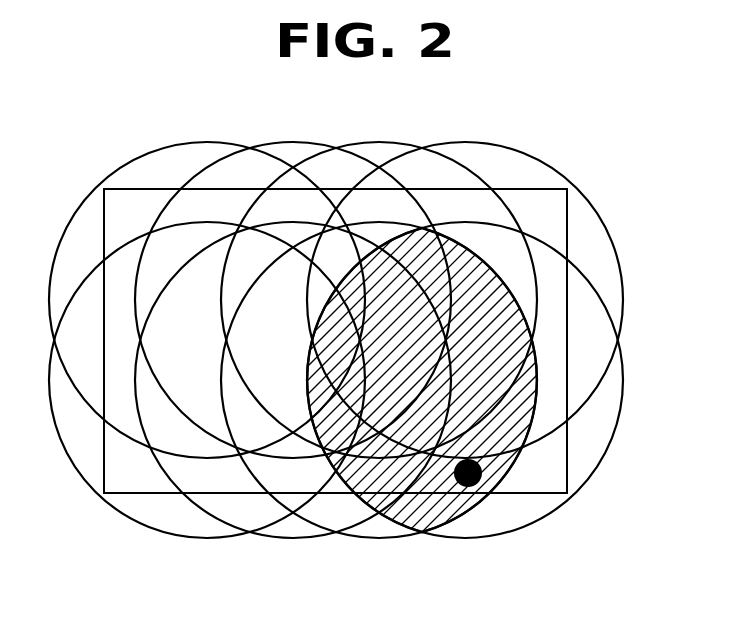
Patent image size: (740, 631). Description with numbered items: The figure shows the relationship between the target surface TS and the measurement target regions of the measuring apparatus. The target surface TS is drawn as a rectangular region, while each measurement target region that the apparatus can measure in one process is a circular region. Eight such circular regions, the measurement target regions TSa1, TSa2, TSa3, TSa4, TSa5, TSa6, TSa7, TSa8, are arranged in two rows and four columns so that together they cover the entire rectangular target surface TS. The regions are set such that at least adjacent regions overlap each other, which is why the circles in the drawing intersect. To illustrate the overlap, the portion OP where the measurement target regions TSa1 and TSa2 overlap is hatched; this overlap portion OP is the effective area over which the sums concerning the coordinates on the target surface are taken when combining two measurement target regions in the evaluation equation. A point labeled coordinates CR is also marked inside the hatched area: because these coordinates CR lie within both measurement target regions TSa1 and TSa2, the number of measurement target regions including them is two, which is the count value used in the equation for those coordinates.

The target surface TS is at (537, 229).
The measurement target region TSa1 is at (465, 401).
The measurement target region TSa2 is at (379, 401).
The measurement target region TSa3 is at (293, 401).
The measurement target region TSa4 is at (207, 401).
The measurement target region TSa5 is at (465, 284).
The measurement target region TSa6 is at (379, 284).
The measurement target region TSa7 is at (293, 284).
The measurement target region TSa8 is at (207, 284).
The overlap portion OP is at (518, 297).
The coordinates CR is at (484, 473).